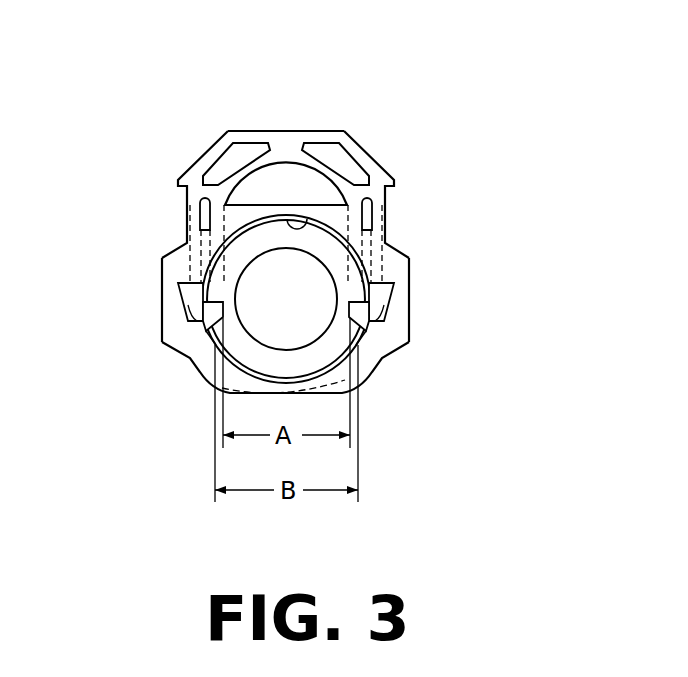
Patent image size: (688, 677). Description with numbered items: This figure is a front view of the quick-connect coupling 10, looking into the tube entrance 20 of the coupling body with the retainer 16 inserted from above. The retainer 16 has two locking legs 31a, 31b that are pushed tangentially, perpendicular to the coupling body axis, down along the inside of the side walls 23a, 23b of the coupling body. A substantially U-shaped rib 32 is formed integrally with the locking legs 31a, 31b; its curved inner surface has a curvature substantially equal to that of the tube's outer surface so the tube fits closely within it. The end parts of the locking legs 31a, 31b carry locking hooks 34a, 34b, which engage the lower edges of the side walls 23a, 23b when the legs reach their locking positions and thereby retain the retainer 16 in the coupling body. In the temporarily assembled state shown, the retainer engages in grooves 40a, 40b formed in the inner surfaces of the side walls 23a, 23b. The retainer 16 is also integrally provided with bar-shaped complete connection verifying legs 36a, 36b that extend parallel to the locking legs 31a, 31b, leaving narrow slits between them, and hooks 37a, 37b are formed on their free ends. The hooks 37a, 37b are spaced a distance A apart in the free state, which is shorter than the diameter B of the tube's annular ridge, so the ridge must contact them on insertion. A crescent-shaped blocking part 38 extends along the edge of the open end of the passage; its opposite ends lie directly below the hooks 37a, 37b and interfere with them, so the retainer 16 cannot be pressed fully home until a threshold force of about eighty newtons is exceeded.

The quick-connect coupling 10 is at (341, 100).
The retainer 16 is at (297, 130).
The tube entrance 20 is at (312, 222).
The U-shaped rib 32 is at (238, 167).
The locking leg 31a is at (190, 204).
The locking leg 31b is at (381, 204).
The side wall 23a is at (162, 268).
The side wall 23b is at (409, 268).
The locking hook 34a is at (190, 293).
The locking hook 34b is at (381, 291).
The complete connection verifying leg 36a is at (204, 297).
The complete connection verifying leg 36b is at (366, 288).
The groove 40a is at (200, 304).
The groove 40b is at (380, 313).
The hook 37a is at (212, 305).
The hook 37b is at (360, 313).
The blocking part 38 is at (238, 391).